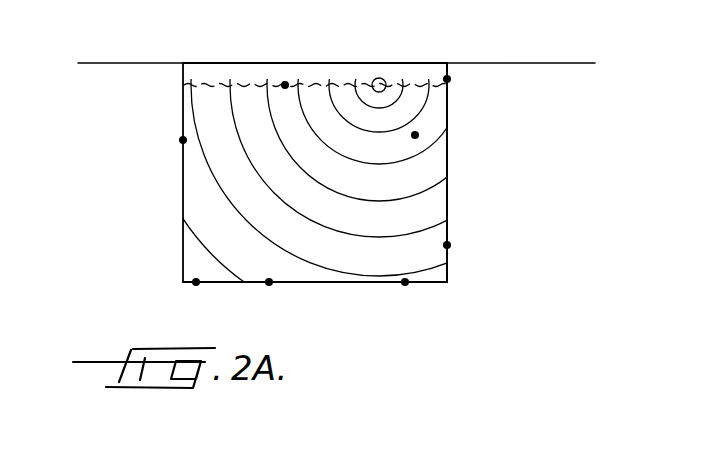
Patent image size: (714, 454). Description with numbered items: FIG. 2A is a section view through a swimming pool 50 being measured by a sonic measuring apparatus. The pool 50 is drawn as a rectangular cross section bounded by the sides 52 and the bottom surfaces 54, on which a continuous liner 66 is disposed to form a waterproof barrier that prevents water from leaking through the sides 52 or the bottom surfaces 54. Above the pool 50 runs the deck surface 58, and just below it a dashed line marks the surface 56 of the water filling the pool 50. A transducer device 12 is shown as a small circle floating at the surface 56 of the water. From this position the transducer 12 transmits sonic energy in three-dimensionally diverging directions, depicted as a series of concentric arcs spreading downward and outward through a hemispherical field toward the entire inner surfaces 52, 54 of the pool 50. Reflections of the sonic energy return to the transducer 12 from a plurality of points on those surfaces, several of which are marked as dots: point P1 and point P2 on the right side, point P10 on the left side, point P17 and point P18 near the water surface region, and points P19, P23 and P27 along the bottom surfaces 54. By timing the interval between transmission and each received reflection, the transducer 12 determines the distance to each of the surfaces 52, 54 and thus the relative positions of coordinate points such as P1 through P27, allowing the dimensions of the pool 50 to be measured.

The transducer device 12 is at (392, 76).
The swimming pool 50 is at (462, 157).
The sides 52 is at (449, 104).
The bottom surfaces 54 is at (342, 283).
The surface of the water 56 is at (222, 85).
The deck surface 58 is at (532, 63).
The continuous liner 66 is at (447, 203).
The point P1 is at (461, 90).
The point P2 is at (461, 256).
The point P10 is at (161, 145).
The point P17 is at (284, 101).
The point P18 is at (395, 149).
The point P19 is at (412, 299).
The point P23 is at (274, 295).
The point P27 is at (192, 295).